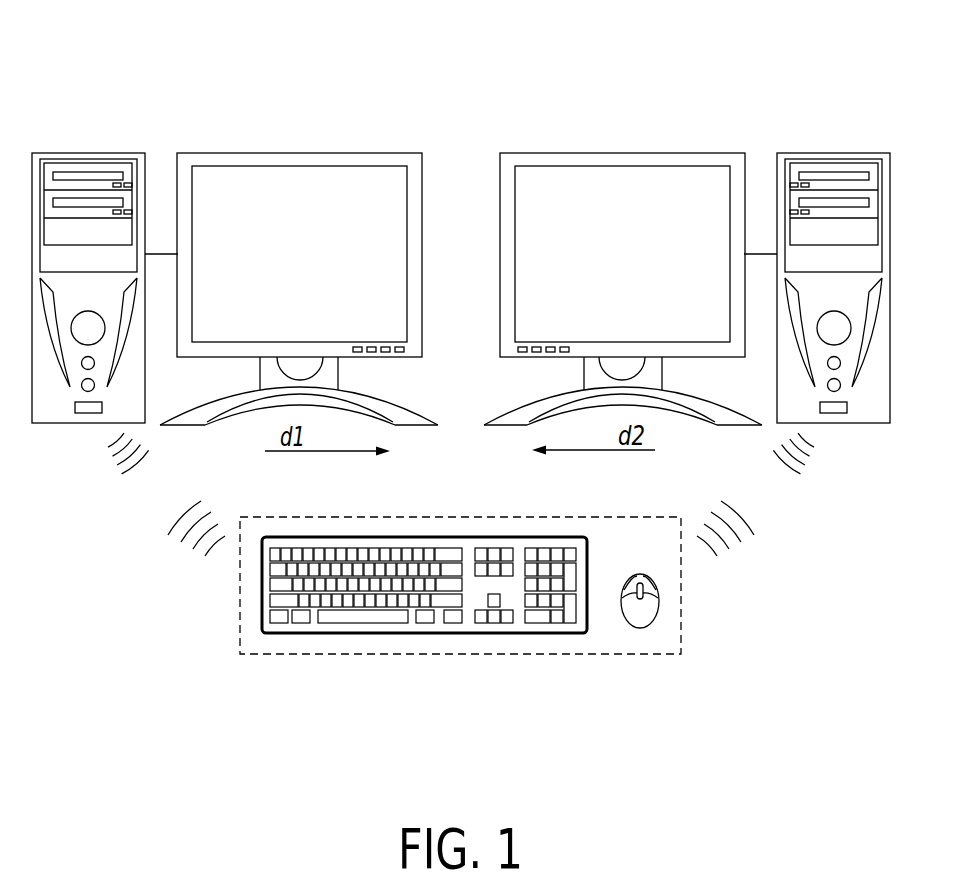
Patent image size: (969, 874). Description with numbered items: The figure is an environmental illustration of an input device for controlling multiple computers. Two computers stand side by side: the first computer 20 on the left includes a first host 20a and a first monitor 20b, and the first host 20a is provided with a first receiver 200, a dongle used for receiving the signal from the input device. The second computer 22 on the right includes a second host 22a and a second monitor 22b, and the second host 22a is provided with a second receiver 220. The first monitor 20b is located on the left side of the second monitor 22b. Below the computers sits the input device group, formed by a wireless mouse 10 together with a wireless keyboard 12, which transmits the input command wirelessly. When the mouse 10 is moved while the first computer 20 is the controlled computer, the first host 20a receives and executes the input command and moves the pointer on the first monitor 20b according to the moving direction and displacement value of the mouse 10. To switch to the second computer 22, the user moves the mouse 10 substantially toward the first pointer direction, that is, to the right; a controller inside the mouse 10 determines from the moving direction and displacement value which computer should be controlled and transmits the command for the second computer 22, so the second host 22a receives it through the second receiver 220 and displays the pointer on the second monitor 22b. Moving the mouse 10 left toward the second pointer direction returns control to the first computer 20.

The first computer 20 is at (297, 63).
The first host 20a is at (86, 153).
The first monitor 20b is at (297, 153).
The first receiver (dongle) 200 is at (87, 414).
The second computer 22 is at (837, 63).
The second host 22a is at (836, 153).
The second monitor 22b is at (625, 153).
The second receiver 220 is at (835, 414).
The wireless keyboard 12 is at (422, 633).
The wireless mouse 10 is at (640, 628).